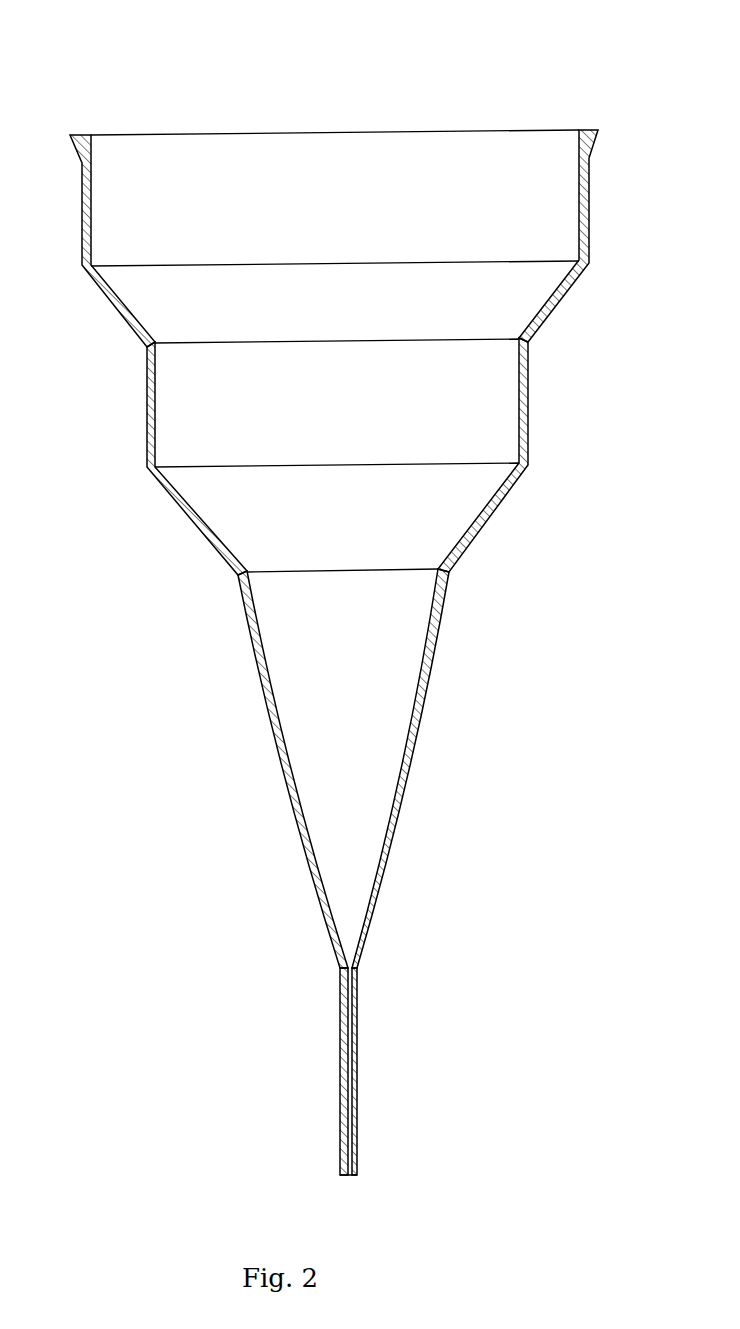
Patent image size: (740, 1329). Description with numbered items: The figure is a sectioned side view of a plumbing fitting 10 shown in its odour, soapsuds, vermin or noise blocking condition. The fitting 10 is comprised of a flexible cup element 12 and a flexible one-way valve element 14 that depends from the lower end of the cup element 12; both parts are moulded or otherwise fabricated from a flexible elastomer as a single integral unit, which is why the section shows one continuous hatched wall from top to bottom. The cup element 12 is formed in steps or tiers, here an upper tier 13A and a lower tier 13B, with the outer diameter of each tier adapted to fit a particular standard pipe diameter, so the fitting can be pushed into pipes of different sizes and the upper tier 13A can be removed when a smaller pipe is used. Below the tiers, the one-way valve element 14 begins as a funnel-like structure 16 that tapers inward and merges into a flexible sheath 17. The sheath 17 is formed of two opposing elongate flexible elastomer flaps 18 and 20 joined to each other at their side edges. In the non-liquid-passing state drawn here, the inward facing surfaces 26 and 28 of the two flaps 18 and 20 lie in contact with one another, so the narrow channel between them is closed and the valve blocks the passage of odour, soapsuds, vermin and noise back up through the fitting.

The plumbing fitting 10 is at (541, 77).
The flexible cup element 12 is at (637, 382).
The upper tier 13A is at (590, 205).
The lower tier 13B is at (529, 447).
The one-way valve element 14 is at (527, 829).
The funnel-like structure 16 is at (281, 758).
The flexible sheath 17 is at (449, 1102).
The elongate flexible elastomer flap 18 is at (340, 1143).
The elongate flexible elastomer flap 20 is at (357, 1141).
The inward facing surface 26 is at (350, 998).
The inward facing surface 28 is at (338, 1061).